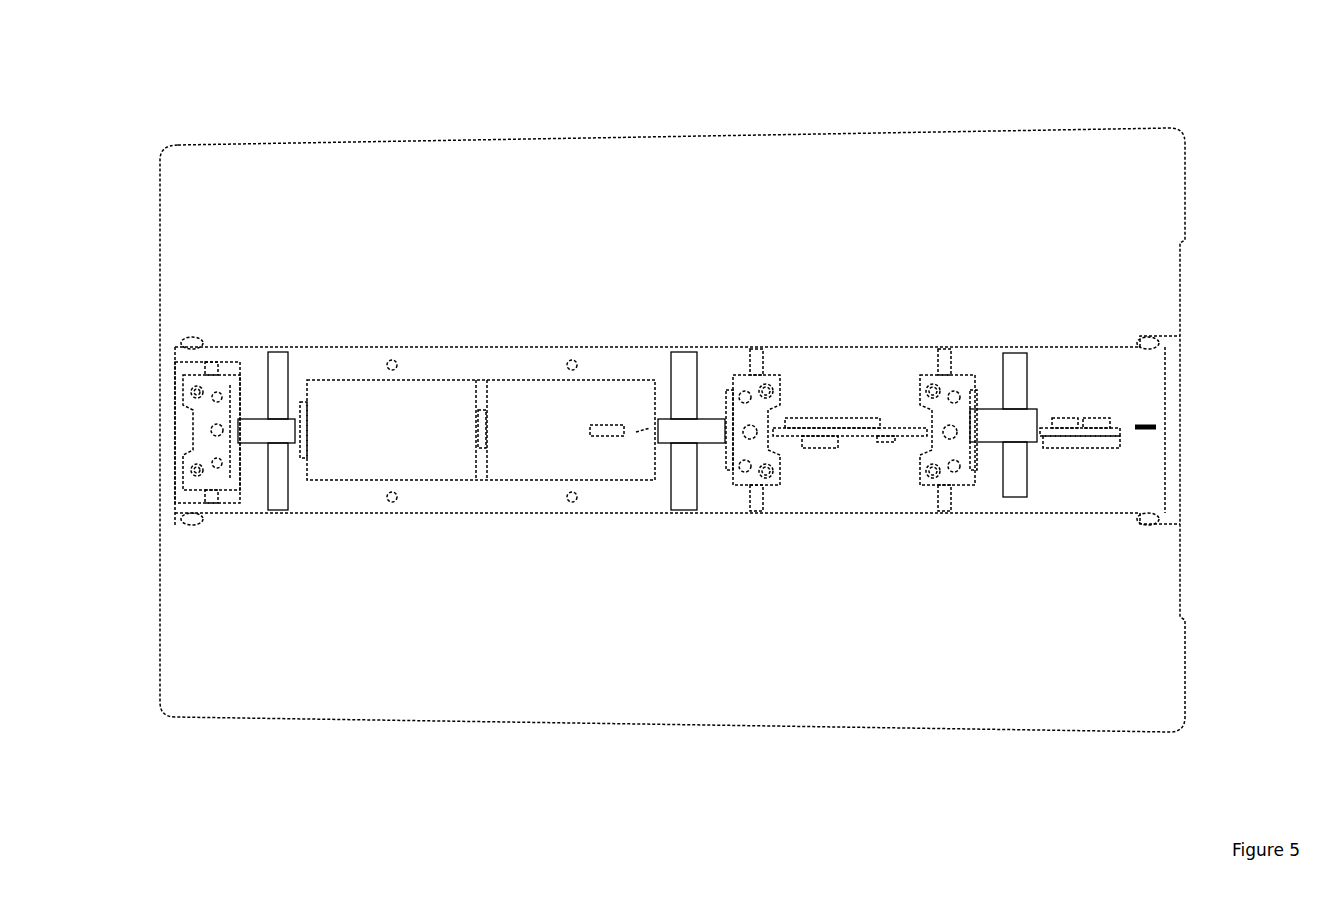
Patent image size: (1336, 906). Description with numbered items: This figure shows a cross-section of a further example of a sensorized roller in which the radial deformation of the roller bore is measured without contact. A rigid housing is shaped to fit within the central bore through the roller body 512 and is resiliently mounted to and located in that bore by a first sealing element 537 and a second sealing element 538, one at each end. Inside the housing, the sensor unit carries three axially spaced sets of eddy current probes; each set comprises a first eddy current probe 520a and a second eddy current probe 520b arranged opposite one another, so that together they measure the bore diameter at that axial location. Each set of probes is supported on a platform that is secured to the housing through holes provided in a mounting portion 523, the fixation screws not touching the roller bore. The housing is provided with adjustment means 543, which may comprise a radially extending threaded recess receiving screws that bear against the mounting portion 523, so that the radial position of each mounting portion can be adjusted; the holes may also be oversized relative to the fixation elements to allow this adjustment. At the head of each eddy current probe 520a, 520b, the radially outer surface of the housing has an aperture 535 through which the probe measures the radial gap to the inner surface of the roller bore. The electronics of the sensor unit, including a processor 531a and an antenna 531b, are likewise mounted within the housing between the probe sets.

The roller body 512 is at (745, 233).
The first eddy current probe 520a is at (272, 388).
The second eddy current probe 520b is at (285, 495).
The mounting portion 523 is at (210, 448).
The processor 531a is at (805, 420).
The antenna 531b is at (1150, 426).
The aperture 535 is at (278, 352).
The first sealing element 537 is at (195, 520).
The second sealing element 538 is at (1143, 517).
The adjustment means 543 is at (757, 362).